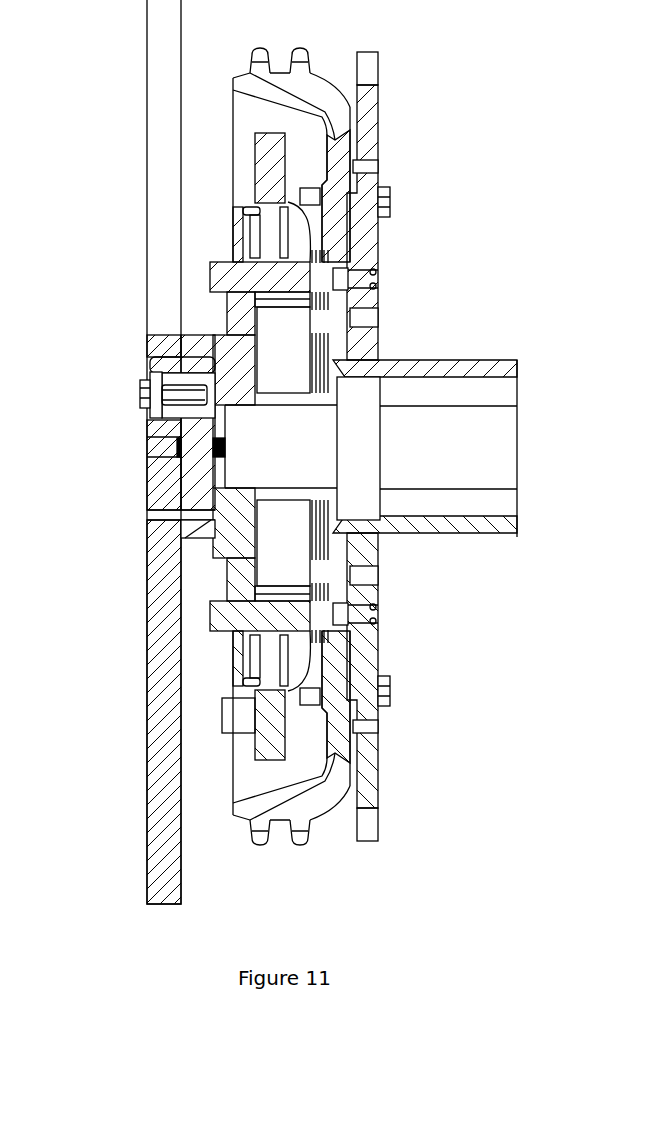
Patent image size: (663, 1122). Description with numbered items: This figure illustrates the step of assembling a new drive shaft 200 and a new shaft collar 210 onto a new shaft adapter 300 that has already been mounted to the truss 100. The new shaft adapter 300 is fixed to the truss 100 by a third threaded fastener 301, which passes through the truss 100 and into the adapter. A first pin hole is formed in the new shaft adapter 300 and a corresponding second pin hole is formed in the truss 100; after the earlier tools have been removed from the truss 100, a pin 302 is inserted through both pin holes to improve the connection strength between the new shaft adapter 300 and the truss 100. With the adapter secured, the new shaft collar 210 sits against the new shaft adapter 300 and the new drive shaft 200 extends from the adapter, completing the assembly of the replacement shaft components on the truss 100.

The truss 100 is at (148, 627).
The new drive shaft 200 is at (420, 360).
The new shaft collar 210 is at (210, 335).
The new shaft adapter 300 is at (190, 470).
The third threaded fastener 301 is at (140, 395).
The pin 302 is at (147, 516).